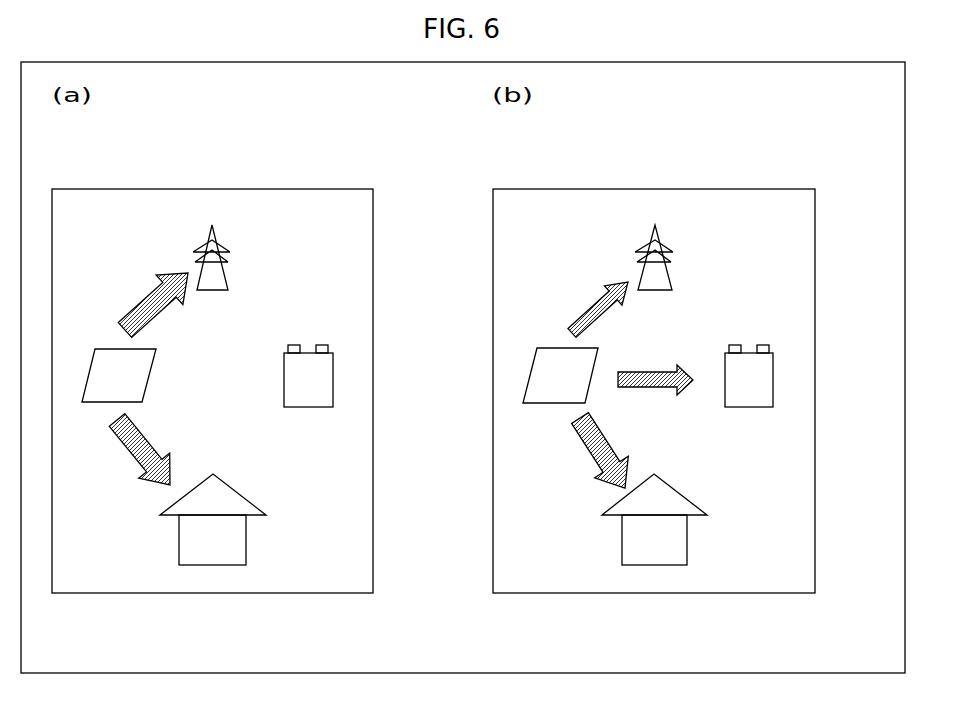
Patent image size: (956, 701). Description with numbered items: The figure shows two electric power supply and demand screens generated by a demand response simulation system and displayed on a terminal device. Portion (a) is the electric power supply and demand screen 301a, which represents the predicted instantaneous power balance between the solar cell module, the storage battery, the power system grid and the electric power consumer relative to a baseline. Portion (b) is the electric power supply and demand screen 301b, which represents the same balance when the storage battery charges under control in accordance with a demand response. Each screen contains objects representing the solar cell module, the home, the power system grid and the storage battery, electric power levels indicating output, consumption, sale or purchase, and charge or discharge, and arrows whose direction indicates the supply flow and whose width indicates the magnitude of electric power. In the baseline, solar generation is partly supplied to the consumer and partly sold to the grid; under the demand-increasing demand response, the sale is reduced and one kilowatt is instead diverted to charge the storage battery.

The electric power supply and demand screen 301a is at (325, 189).
The electric power supply and demand screen 301b is at (766, 189).